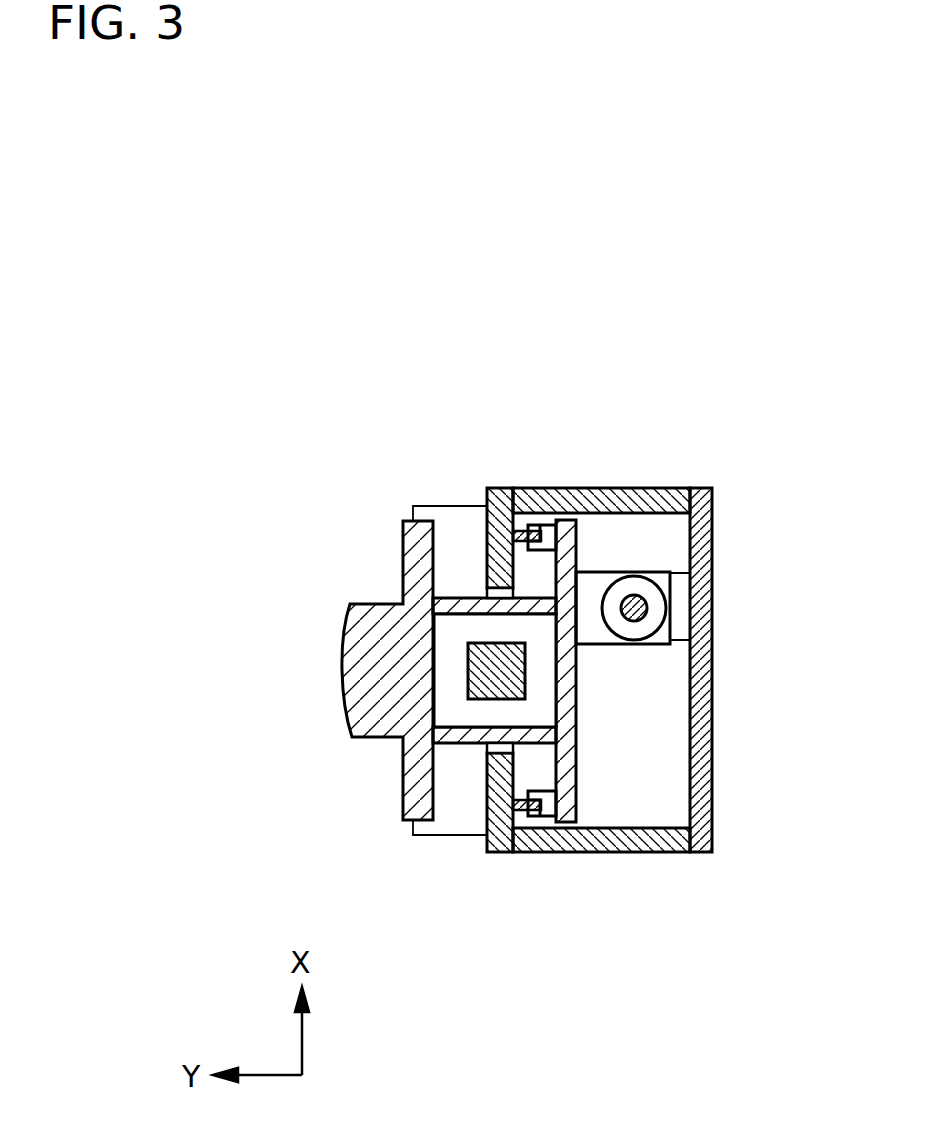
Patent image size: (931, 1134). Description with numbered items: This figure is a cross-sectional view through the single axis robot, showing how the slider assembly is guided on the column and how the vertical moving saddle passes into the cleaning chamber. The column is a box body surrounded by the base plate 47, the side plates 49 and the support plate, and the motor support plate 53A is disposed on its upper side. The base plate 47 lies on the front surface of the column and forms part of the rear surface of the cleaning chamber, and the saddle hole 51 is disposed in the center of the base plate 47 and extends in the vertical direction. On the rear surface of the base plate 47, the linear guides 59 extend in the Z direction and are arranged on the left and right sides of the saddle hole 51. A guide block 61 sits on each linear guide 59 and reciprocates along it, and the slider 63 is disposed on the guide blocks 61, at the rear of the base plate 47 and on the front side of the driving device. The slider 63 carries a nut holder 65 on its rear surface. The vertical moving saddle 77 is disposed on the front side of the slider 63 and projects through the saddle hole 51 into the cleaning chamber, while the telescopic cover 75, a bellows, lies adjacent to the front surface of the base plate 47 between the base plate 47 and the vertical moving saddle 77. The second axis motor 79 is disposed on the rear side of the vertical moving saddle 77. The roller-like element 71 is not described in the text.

The base plate 47 is at (488, 497).
The side plate 49 is at (662, 488).
The saddle hole 51 is at (487, 745).
The motor support plate 53A is at (712, 716).
The linear guide 59 is at (520, 531).
The guide block 61 is at (540, 525).
The slider 63 is at (577, 716).
The nut holder 65 is at (672, 608).
The roller 71 is at (634, 608).
The telescopic cover 75 is at (425, 505).
The vertical moving saddle 77 is at (340, 642).
The second axis motor 79 is at (468, 695).